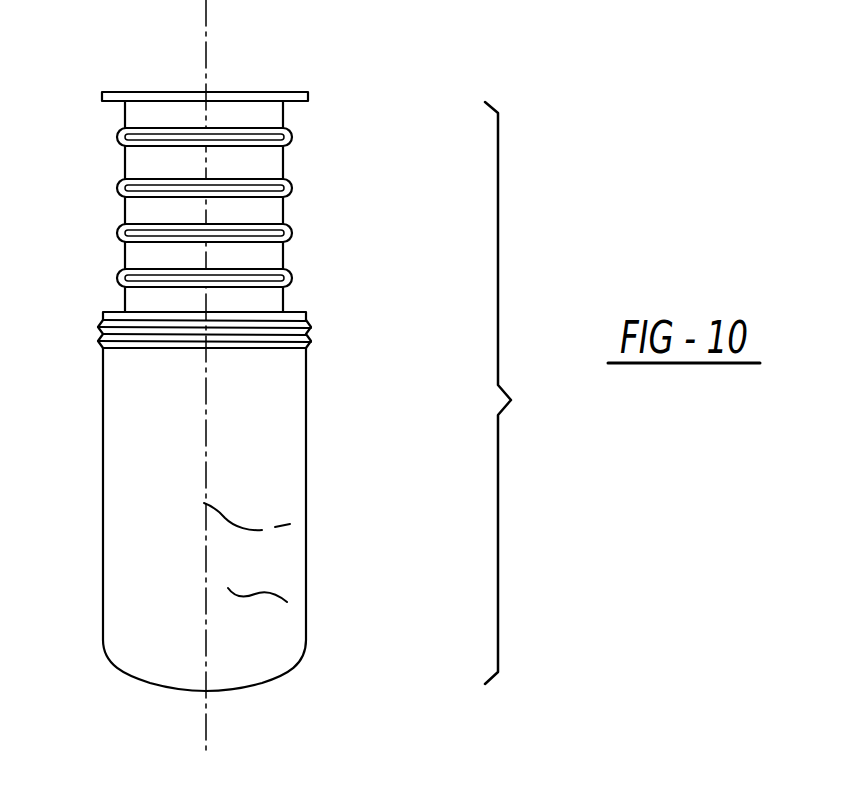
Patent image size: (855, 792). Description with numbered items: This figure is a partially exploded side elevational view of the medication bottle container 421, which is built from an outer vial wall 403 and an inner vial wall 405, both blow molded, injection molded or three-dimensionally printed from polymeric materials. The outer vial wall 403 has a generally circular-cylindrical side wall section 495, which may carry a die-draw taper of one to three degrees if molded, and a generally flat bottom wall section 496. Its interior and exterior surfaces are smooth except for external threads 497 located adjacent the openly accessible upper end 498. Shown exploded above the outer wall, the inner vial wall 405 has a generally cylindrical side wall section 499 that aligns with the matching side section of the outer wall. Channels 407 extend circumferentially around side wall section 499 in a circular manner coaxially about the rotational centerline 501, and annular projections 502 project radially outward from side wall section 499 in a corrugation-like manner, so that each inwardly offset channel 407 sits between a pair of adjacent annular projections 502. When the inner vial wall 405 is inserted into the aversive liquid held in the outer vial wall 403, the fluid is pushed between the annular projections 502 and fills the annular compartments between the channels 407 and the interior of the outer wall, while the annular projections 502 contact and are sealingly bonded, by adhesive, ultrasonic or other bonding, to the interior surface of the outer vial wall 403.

The inner vial wall 405 is at (217, 110).
The channels 407 is at (265, 163).
The side wall section 499 is at (118, 188).
The annular projections 502 is at (267, 192).
The upper end 498 is at (167, 312).
The external threads 497 is at (267, 347).
The side wall section 495 is at (263, 458).
The rotational centerline 501 is at (297, 522).
The outer vial wall 403 is at (257, 583).
The bottom wall section 496 is at (227, 692).
The container 421 is at (524, 393).